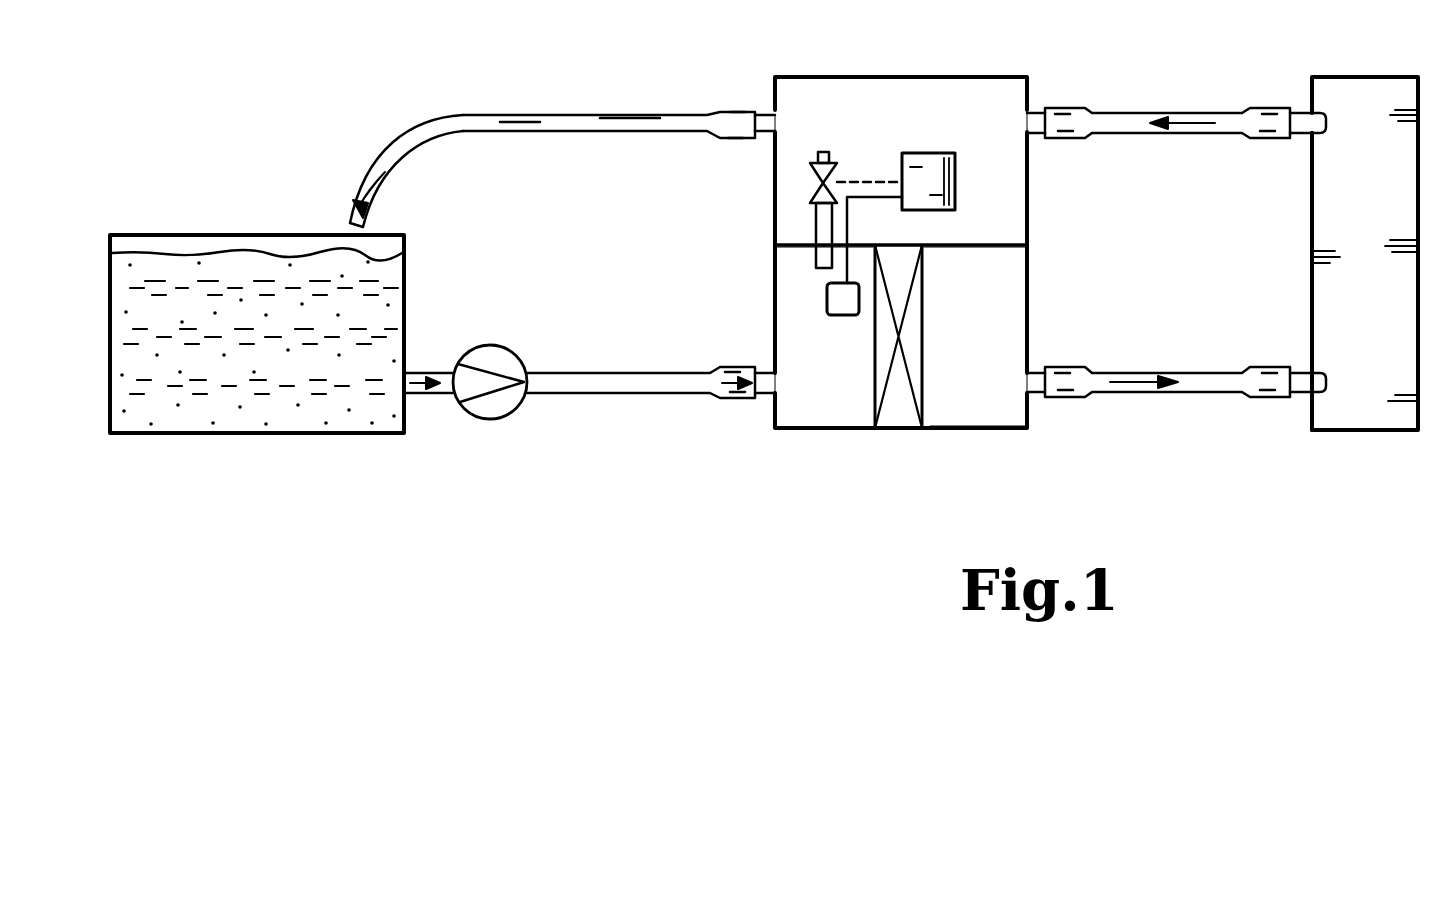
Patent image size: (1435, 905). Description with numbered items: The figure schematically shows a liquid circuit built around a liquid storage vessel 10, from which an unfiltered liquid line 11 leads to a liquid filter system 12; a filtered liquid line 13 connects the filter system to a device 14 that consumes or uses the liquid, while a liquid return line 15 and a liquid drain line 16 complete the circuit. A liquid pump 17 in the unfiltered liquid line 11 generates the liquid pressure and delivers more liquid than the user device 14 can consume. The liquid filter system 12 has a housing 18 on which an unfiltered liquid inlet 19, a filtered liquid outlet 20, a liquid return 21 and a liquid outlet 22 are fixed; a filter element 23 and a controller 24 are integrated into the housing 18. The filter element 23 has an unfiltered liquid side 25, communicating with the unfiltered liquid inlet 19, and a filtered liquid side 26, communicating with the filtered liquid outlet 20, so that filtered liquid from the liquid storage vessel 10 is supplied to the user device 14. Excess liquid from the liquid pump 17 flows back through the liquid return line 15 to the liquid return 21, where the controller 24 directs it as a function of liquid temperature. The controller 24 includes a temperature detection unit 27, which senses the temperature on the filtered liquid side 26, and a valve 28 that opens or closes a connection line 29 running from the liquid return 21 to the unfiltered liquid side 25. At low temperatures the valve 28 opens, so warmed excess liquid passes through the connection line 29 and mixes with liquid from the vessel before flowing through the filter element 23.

The liquid storage vessel 10 is at (277, 408).
The unfiltered liquid line 11 is at (630, 385).
The liquid filter system 12 is at (815, 432).
The filtered liquid line 13 is at (1205, 380).
The user device 14 is at (1360, 98).
The liquid return line 15 is at (1228, 125).
The liquid drain line 16 is at (565, 125).
The liquid pump 17 is at (508, 398).
The housing 18 is at (1008, 417).
The unfiltered liquid inlet 19 is at (770, 382).
The filtered liquid outlet 20 is at (1032, 377).
The liquid return 21 is at (1028, 122).
The liquid outlet 22 is at (768, 122).
The filter element 23 is at (897, 405).
The controller 24 is at (933, 153).
The unfiltered liquid side 25 is at (840, 395).
The filtered liquid side 26 is at (960, 395).
The temperature detection unit 27 is at (838, 298).
The valve 28 is at (840, 150).
The connection line 29 is at (815, 222).